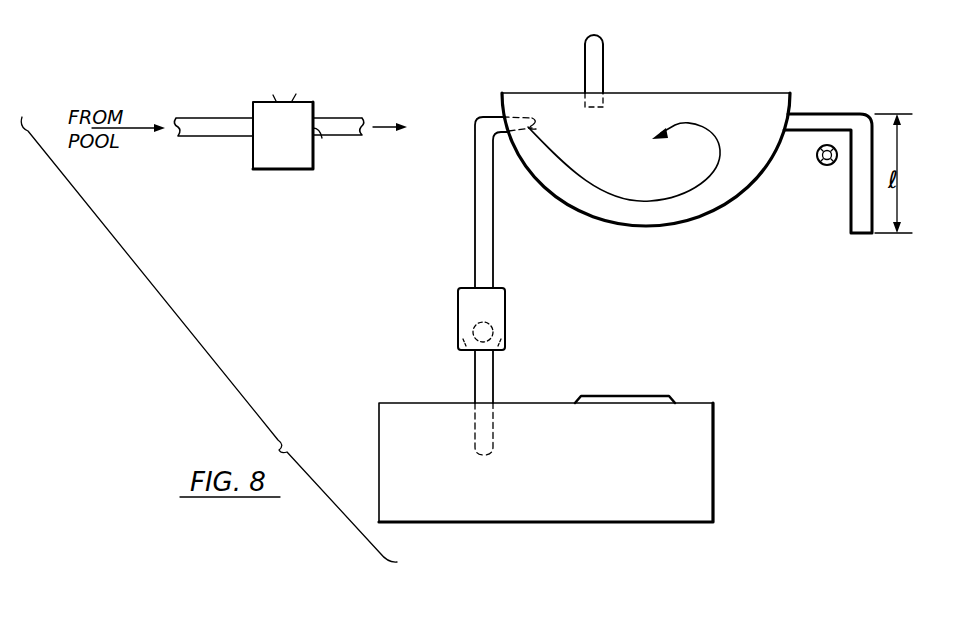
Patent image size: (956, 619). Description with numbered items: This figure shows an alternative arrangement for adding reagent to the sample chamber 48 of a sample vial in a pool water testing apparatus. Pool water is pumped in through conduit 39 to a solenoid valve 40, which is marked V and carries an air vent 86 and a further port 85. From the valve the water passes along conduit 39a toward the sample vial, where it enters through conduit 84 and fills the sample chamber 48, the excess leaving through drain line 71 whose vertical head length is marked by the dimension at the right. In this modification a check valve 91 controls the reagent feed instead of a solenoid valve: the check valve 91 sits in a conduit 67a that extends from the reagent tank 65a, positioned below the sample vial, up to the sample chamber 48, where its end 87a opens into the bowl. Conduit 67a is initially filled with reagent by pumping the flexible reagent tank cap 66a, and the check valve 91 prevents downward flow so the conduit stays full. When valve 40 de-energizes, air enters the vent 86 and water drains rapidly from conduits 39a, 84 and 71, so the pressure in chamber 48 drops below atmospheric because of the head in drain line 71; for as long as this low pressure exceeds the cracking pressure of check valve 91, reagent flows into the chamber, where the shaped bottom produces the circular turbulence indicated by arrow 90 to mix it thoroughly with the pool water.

The conduit 39 is at (218, 118).
The conduit 39a is at (338, 100).
The valve 40 is at (279, 168).
The sample chamber 48 is at (729, 94).
The reagent tank 65a is at (713, 476).
The reagent tank cap 66a is at (637, 399).
The conduit 67a is at (488, 228).
The drain line 71 is at (854, 192).
The conduit 84 is at (583, 50).
The valve outlet port 85 is at (322, 138).
The air vent 86 is at (286, 100).
The inlet port into bowl 87a is at (541, 123).
The arrow 90 is at (718, 155).
The check valve 91 is at (498, 303).